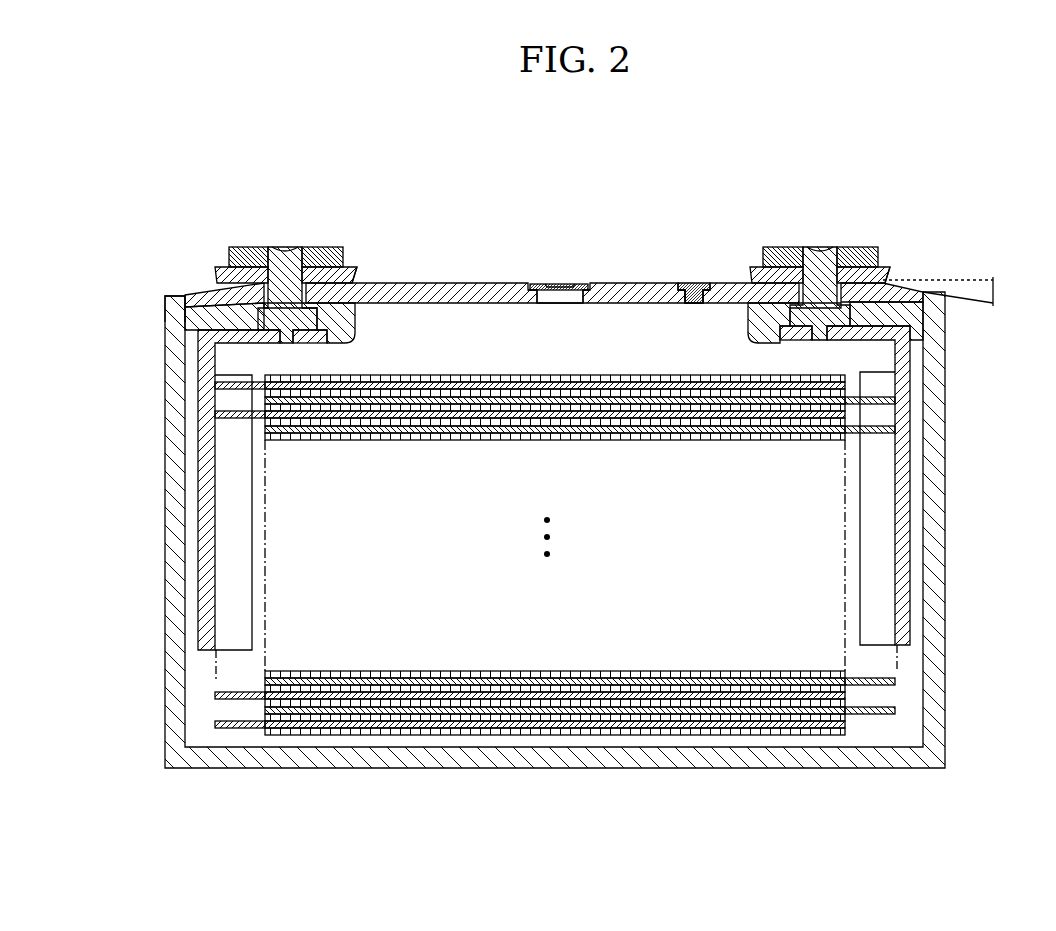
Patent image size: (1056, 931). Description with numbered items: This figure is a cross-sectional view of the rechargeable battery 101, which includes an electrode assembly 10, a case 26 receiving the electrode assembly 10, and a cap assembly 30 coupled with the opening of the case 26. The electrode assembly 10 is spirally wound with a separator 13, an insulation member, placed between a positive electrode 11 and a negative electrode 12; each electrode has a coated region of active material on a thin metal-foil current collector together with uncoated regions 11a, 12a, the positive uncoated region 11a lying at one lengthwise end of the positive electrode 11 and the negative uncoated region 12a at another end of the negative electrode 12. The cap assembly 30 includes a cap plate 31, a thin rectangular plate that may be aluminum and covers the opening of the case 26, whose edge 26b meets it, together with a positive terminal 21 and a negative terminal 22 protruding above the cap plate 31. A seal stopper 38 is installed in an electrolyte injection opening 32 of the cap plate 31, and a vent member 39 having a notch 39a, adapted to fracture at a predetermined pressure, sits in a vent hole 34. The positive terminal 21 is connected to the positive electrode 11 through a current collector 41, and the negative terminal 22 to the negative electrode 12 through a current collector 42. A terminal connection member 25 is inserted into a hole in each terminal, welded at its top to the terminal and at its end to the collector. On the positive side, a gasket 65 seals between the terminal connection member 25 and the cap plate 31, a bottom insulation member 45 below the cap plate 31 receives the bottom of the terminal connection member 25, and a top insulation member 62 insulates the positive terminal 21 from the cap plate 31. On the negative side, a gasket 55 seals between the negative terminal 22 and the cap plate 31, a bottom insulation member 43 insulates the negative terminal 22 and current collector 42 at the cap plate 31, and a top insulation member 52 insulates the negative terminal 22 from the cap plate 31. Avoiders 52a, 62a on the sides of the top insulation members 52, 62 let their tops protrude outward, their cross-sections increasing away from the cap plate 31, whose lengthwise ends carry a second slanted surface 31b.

The rechargeable battery 101 is at (545, 155).
The electrode assembly 10 is at (556, 597).
The positive electrode 11 is at (745, 714).
The positive uncoated region 11a is at (872, 714).
The negative electrode 12 is at (355, 730).
The negative uncoated region 12a is at (230, 700).
The separator 13 is at (552, 702).
The positive terminal 21 is at (856, 247).
The negative terminal 22 is at (255, 247).
The terminal connection member 25 is at (286, 250).
The case 26 is at (935, 550).
The case opening edge 26b is at (170, 298).
The cap assembly 30 is at (550, 279).
The cap plate 31 is at (632, 283).
The second slanted surface 31b is at (188, 294).
The electrolyte injection opening 32 is at (694, 303).
The vent hole 34 is at (560, 304).
The seal stopper 38 is at (694, 283).
The vent member 39 is at (588, 284).
The notch 39a is at (560, 284).
The current collector 41 is at (902, 450).
The current collector 42 is at (200, 440).
The bottom insulation member 43 is at (200, 318).
The bottom insulation member 45 is at (903, 313).
The top insulation member 52 is at (352, 270).
The avoider 52a is at (355, 281).
The gasket 55 is at (216, 296).
The top insulation member 62 is at (888, 270).
The avoider 62a is at (890, 279).
The gasket 65 is at (765, 318).